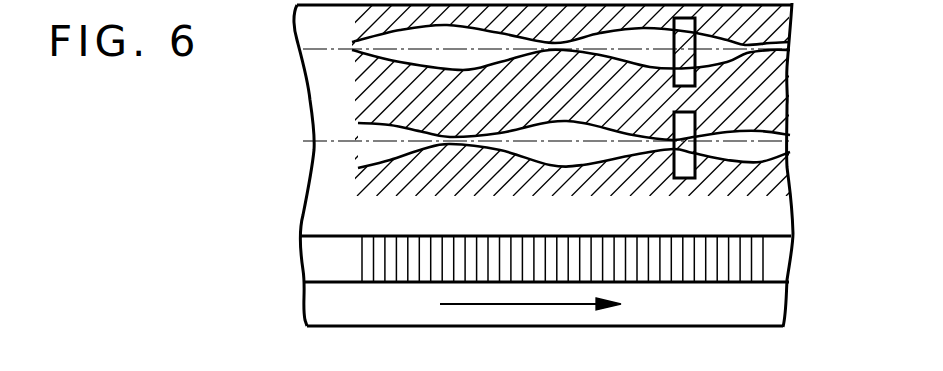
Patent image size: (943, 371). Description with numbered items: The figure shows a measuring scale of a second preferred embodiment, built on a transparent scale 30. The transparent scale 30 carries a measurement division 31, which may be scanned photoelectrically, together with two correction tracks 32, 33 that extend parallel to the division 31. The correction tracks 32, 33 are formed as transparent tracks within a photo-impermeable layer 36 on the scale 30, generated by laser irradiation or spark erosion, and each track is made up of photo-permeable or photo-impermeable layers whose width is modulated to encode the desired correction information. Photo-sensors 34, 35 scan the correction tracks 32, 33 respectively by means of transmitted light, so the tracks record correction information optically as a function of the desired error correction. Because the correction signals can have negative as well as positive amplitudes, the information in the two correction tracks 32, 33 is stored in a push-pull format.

The transparent scale 30 is at (776, 307).
The measurement division 31 is at (776, 262).
The correction track 32 is at (767, 151).
The correction track 33 is at (764, 58).
The photo-sensor 34 is at (768, 12).
The photo-sensor 35 is at (686, 173).
The photo-impermeable layer 36 is at (770, 97).